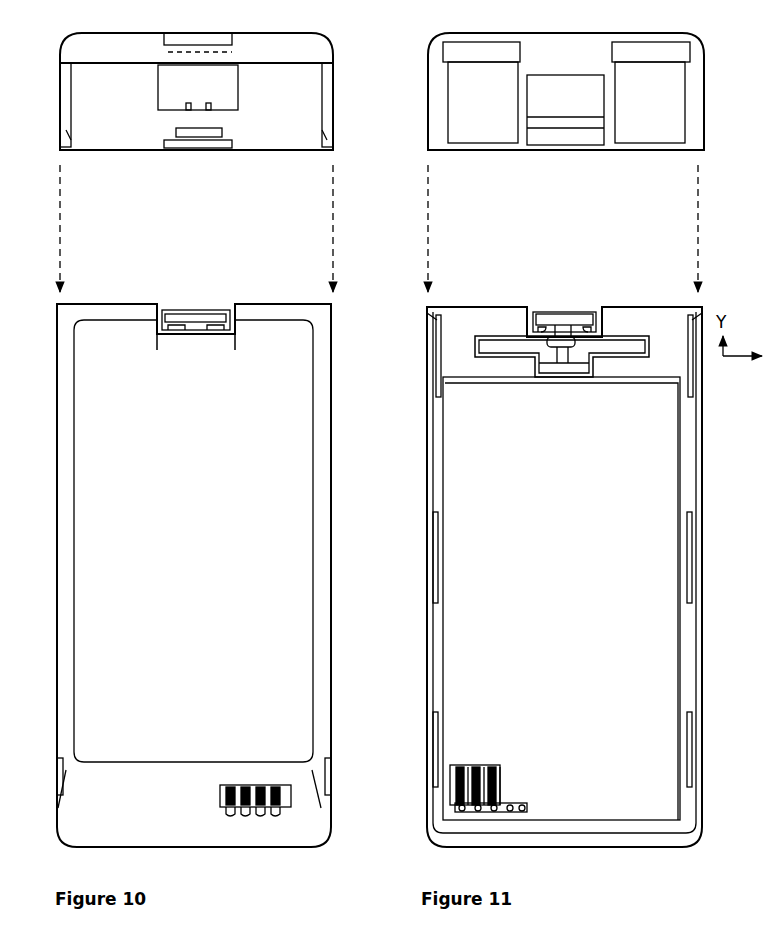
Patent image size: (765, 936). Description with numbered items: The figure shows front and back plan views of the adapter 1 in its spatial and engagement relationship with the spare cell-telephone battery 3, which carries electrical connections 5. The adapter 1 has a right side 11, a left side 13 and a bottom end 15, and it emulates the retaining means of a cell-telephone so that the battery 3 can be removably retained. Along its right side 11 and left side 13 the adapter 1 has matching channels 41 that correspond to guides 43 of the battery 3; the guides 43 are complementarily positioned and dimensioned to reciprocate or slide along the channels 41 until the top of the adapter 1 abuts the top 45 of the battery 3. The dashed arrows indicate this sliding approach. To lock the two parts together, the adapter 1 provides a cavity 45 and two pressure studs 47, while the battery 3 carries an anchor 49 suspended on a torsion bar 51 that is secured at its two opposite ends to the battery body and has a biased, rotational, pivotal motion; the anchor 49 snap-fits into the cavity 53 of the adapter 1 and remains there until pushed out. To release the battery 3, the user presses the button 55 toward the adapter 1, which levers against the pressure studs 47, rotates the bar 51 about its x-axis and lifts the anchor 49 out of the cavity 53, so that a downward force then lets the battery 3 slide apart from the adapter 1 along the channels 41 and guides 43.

In FIG. 10, the adapter 1 is at (338, 55).
In FIG. 11, the adapter 1 is at (707, 55).
In FIG. 10, the spare cell-telephone battery 3 is at (194, 575).
In FIG. 11, the spare cell-telephone battery 3 is at (564, 577).
In FIG. 10, the electrical connections 5 is at (222, 798).
In FIG. 11, the electrical connections 5 is at (488, 788).
In FIG. 10, the right side 11 is at (336, 115).
In FIG. 11, the right side 11 is at (430, 86).
In FIG. 10, the left side 13 is at (57, 94).
In FIG. 10, the bottom end 15 is at (250, 153).
In FIG. 10, the channels 41 is at (66, 137).
In FIG. 11, the guides 43 is at (442, 320).
In FIG. 10, the cavity / top of battery 45 is at (198, 87).
In FIG. 11, the cavity / top of battery 45 is at (504, 304).
In FIG. 10, the pressure studs 47 is at (184, 100).
In FIG. 11, the anchor 49 is at (562, 366).
In FIG. 11, the torsion bar 51 is at (634, 350).
In FIG. 10, the cavity 53 is at (220, 130).
In FIG. 10, the button 55 is at (190, 318).
In FIG. 11, the button 55 is at (560, 316).